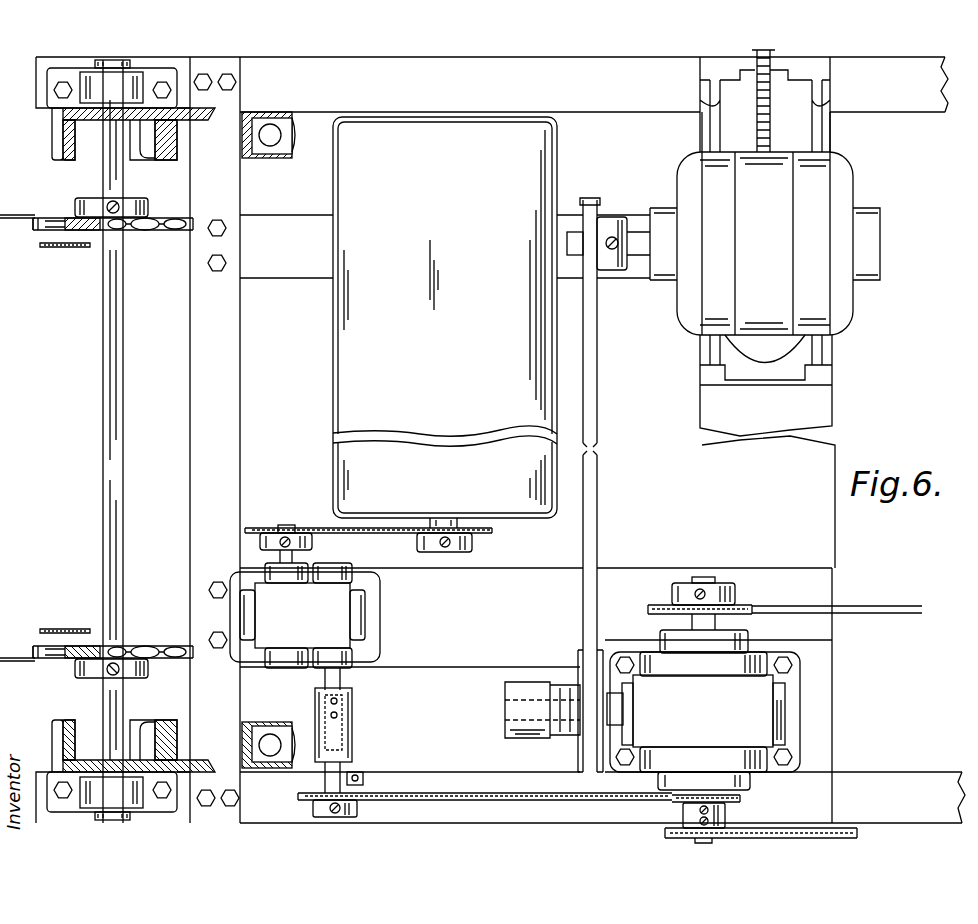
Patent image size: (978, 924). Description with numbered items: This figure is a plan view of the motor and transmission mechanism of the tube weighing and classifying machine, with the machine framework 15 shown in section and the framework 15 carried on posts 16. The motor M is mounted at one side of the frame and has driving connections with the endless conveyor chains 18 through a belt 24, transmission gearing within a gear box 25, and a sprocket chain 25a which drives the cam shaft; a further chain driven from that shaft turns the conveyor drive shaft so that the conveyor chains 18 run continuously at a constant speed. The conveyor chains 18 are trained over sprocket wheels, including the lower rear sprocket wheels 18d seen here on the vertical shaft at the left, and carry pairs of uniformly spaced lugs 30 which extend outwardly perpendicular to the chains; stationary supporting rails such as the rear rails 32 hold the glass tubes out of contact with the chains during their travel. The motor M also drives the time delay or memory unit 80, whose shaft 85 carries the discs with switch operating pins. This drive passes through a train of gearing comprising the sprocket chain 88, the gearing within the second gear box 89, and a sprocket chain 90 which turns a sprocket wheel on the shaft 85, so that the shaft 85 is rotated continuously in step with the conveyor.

The framework 15 is at (636, 106).
The posts 16 is at (267, 165).
The conveyor chains 18 is at (40, 232).
The lower rear sprocket wheels 18d is at (145, 232).
The belt 24 is at (600, 402).
The gear box 25 is at (712, 710).
The sprocket chain 25a is at (841, 828).
The lugs 30 is at (14, 220).
The rear rails 32 is at (80, 248).
The time delay unit 80 is at (447, 388).
The shaft 85 is at (490, 527).
The sprocket chain 88 is at (443, 792).
The gear box 89 is at (312, 613).
The sprocket chain 90 is at (328, 528).
The motor M is at (835, 190).